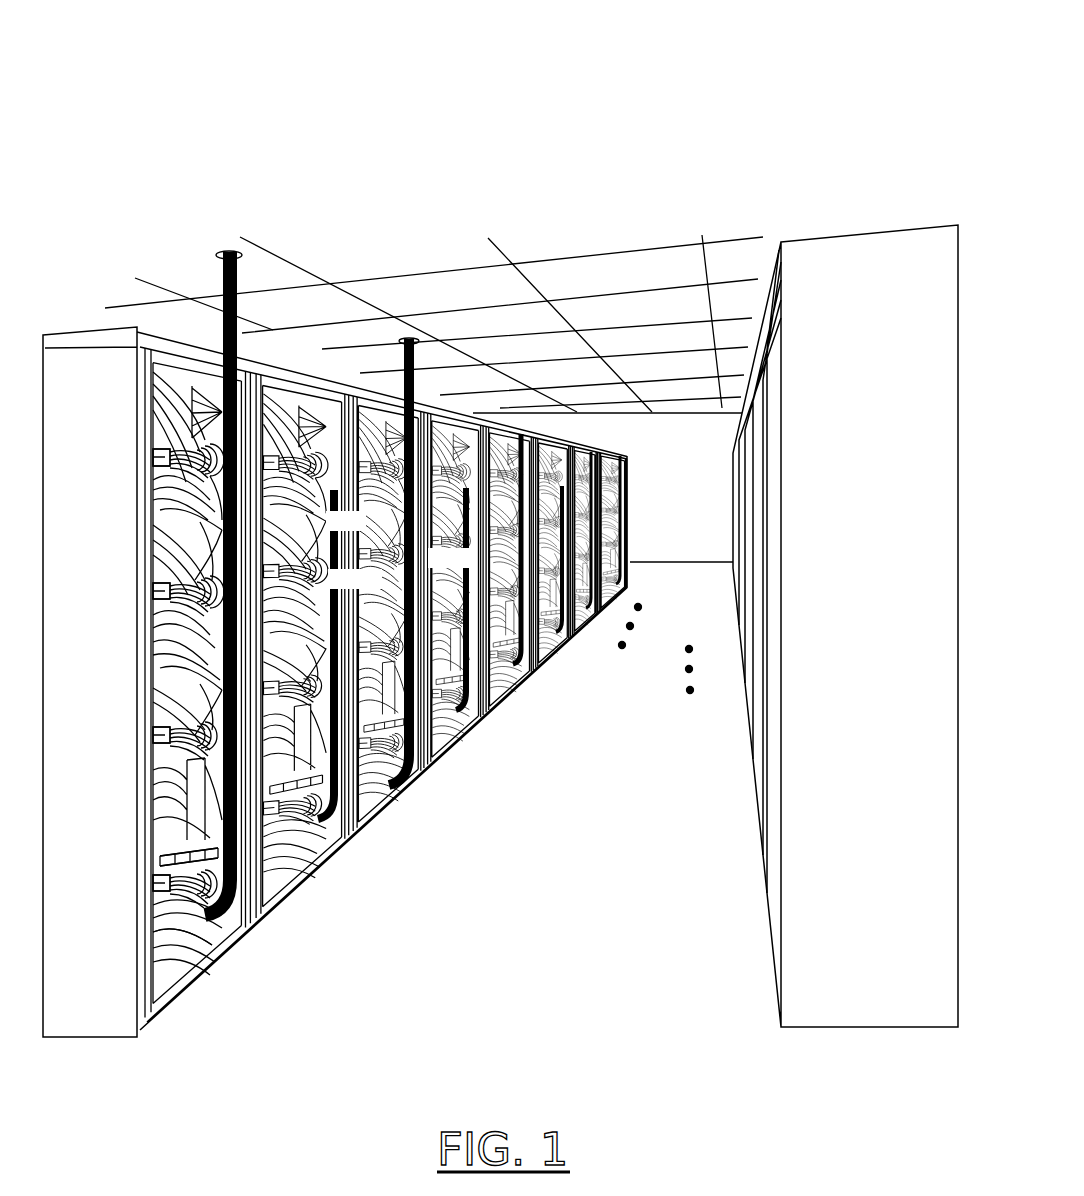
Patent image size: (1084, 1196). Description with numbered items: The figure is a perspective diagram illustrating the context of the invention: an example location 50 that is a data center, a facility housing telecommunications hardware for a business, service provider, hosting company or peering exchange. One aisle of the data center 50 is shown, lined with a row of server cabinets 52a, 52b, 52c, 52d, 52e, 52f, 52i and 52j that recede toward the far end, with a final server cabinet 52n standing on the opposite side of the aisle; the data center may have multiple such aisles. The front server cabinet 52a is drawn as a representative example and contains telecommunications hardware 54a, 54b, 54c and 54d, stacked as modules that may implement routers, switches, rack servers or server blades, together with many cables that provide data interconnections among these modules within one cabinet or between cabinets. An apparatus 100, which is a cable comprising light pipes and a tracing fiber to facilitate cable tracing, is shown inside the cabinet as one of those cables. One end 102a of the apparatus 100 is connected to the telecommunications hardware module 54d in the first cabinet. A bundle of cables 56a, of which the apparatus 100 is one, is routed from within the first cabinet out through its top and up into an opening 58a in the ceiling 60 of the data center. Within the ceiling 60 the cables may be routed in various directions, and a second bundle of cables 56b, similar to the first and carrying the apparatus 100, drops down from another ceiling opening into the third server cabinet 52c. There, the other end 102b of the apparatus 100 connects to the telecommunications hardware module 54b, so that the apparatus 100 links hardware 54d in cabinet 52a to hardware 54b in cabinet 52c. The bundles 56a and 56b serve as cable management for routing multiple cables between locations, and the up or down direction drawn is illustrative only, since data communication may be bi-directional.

The data center 50 is at (402, 38).
The server cabinet 52a is at (200, 978).
The server cabinet 52b is at (345, 848).
The server cabinet 52c is at (415, 785).
The server cabinet 52d is at (477, 723).
The server cabinet 52e is at (525, 677).
The server cabinet 52f is at (567, 637).
The server cabinet 52i is at (632, 535).
The server cabinet 52j is at (732, 586).
The server cabinet 52n is at (767, 911).
The telecommunications hardware 54a is at (155, 458).
The telecommunications hardware module 54b is at (155, 590).
The telecommunications hardware 54c is at (155, 735).
The telecommunications hardware module 54d is at (153, 886).
The cable bundle 56a is at (222, 275).
The cable bundle 56b is at (421, 357).
The opening 58a is at (245, 254).
The ceiling 60 is at (600, 252).
The apparatus 100 is at (153, 933).
The end 102a is at (167, 859).
The end 102b is at (395, 559).